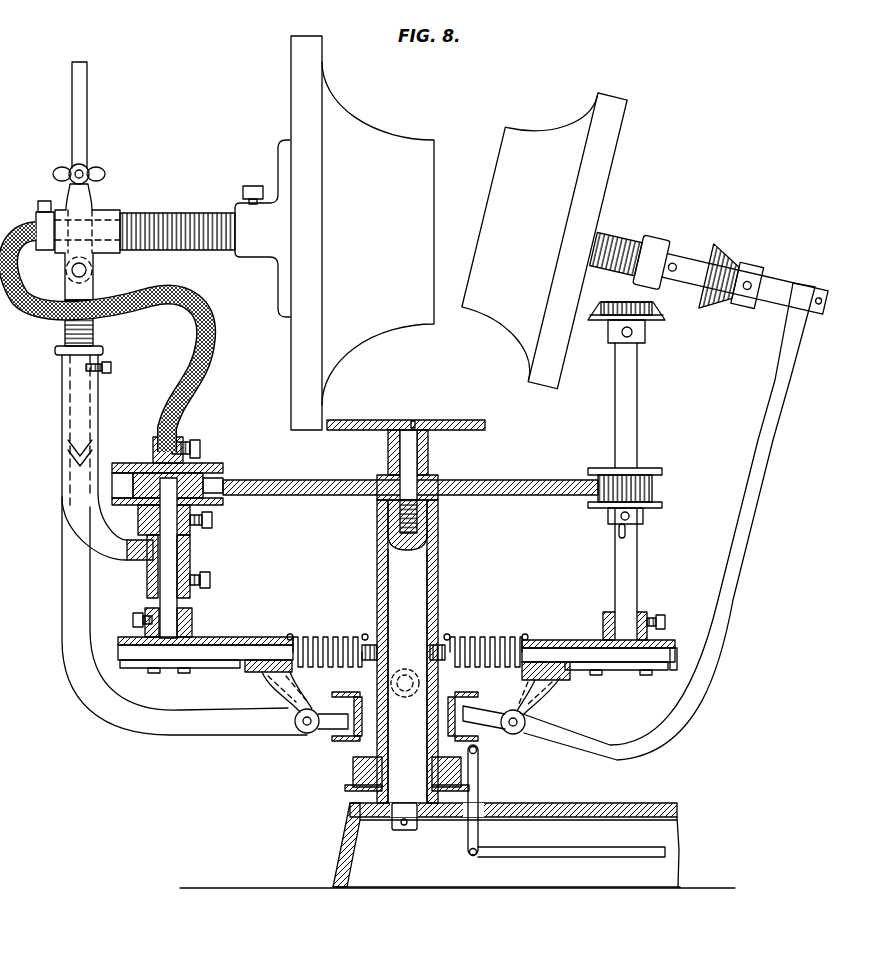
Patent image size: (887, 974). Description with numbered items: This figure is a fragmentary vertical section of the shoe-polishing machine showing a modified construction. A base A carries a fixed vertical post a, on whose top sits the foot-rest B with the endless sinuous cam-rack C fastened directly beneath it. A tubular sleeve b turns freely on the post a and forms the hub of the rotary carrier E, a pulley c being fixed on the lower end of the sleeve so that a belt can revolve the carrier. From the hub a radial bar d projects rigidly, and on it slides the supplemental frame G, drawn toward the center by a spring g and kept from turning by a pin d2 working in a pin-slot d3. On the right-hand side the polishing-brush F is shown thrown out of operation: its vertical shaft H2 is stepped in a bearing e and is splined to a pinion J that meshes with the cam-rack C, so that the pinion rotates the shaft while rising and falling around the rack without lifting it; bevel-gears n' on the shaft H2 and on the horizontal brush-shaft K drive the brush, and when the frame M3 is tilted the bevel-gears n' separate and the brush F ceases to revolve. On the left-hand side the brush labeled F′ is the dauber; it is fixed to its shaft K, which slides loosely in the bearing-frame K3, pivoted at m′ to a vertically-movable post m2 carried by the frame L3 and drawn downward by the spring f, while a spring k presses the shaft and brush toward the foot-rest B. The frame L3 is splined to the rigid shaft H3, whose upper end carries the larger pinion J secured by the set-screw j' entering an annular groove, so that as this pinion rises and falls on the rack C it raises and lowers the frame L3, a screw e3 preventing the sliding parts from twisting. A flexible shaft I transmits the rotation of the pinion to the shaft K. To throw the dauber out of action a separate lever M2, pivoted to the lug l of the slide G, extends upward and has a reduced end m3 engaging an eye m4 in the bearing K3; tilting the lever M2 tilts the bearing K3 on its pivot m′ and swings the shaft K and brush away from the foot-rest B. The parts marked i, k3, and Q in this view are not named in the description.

The grinding wheel (left) F′ is at (362, 233).
The brush F is at (537, 231).
The base A is at (506, 845).
The foot-rest B is at (416, 418).
The cam-rack C is at (525, 480).
The post a is at (407, 690).
The tubular shaft or sleeve b is at (378, 603).
The pulley c is at (352, 776).
The radial bar or arm d is at (230, 655).
The pin d2 is at (672, 662).
The pin-slot d3 is at (170, 668).
The bearing e is at (192, 620).
The screw e3 is at (112, 368).
The rotary carrier E is at (207, 627).
The spring f is at (63, 349).
The spring g is at (330, 640).
The supplemental frame G is at (262, 640).
The shaft H2 is at (638, 477).
The shaft H3 is at (168, 600).
The lever pivot i is at (526, 719).
The flexible shaft I is at (197, 357).
The set-screw j' is at (208, 528).
The pinion J is at (140, 478).
The spring k is at (210, 225).
The pin k3 is at (44, 226).
The shaft K is at (175, 222).
The bearing-frame K3 is at (99, 212).
The lug l is at (297, 727).
The frame L3 is at (62, 492).
The pivot m′ is at (88, 271).
The post m2 is at (95, 322).
The reduced end m3 is at (96, 115).
The eye m4 is at (101, 168).
The lever M2 is at (110, 694).
The frame M3 is at (742, 563).
The bevel-gears n' is at (677, 295).
The cup collar Q is at (340, 738).